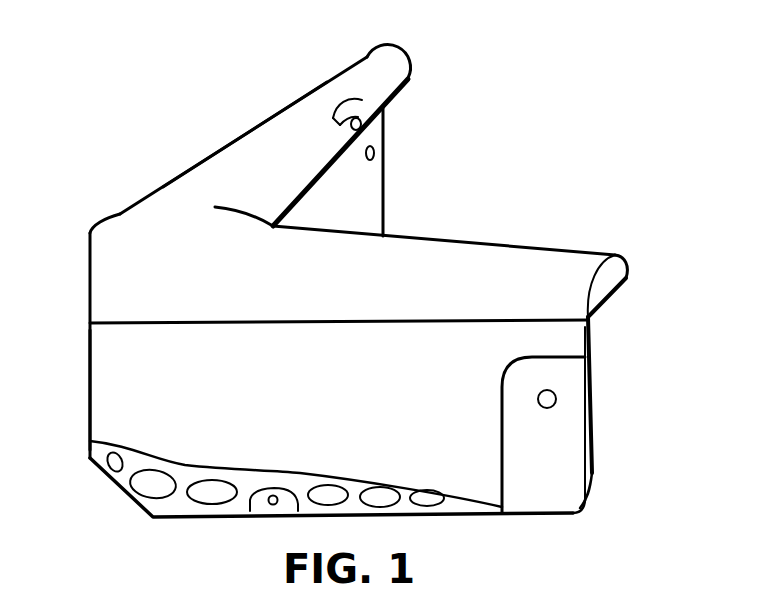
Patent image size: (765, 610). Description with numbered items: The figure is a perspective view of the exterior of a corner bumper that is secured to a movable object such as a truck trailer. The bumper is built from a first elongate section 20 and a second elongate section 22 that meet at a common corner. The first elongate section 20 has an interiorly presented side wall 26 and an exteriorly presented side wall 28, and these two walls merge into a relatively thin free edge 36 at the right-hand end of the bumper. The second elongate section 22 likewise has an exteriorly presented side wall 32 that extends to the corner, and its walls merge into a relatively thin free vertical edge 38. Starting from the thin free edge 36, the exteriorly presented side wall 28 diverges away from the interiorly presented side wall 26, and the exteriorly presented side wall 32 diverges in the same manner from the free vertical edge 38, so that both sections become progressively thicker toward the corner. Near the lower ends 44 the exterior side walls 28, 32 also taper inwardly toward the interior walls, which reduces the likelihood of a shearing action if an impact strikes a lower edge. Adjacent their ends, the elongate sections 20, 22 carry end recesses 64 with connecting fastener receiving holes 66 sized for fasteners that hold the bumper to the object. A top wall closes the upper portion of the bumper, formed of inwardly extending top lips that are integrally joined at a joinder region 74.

The first elongate section 20 is at (539, 236).
The second elongate section 22 is at (435, 70).
The interiorly presented side wall 26 is at (592, 330).
The exteriorly presented side wall 28 is at (118, 408).
The exteriorly presented side wall 32 is at (240, 137).
The free edge 36 is at (593, 475).
The free vertical edge 38 is at (384, 188).
The lower ends 44 is at (218, 517).
The end recesses 64 is at (540, 472).
The fastener receiving holes 66 is at (375, 151).
The joinder region 74 is at (188, 229).